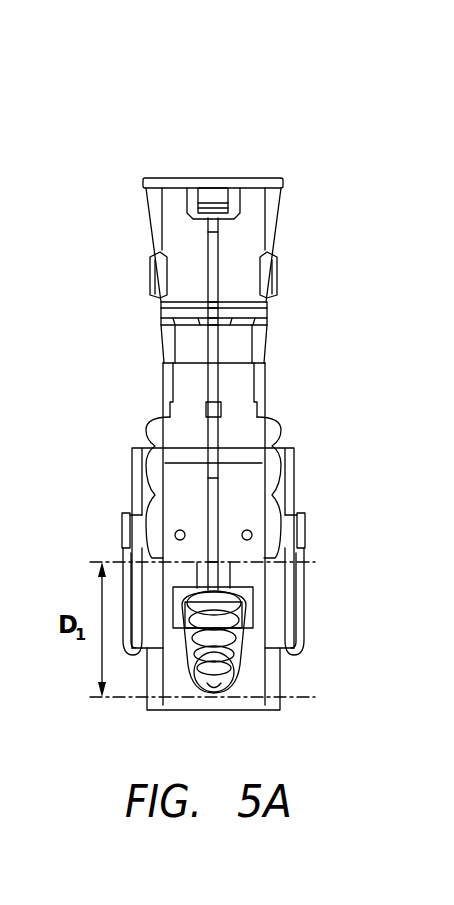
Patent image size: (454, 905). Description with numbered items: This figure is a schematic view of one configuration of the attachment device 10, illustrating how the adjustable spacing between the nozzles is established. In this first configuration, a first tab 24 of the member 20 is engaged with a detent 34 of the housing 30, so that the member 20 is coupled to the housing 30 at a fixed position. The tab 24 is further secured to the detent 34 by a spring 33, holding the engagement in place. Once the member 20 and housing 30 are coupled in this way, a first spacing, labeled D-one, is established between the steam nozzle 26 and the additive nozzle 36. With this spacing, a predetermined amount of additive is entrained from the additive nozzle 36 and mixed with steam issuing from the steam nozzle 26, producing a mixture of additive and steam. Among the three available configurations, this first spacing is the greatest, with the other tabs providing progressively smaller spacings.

The attachment device 10 is at (137, 157).
The member 20 is at (238, 262).
The tab 24 is at (287, 457).
The detent 34 is at (287, 527).
The spring 33 is at (302, 573).
The steam nozzle 26 is at (210, 560).
The housing 30 is at (257, 635).
The additive nozzle 36 is at (210, 697).